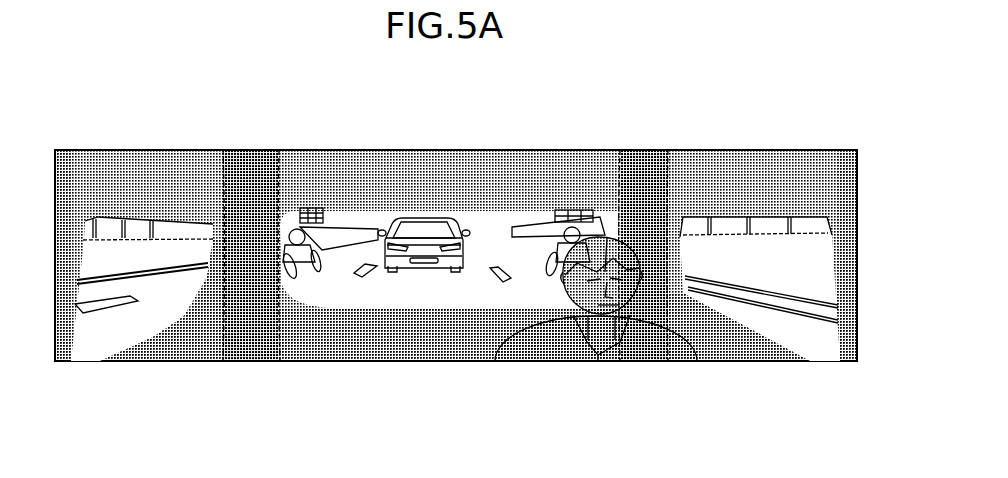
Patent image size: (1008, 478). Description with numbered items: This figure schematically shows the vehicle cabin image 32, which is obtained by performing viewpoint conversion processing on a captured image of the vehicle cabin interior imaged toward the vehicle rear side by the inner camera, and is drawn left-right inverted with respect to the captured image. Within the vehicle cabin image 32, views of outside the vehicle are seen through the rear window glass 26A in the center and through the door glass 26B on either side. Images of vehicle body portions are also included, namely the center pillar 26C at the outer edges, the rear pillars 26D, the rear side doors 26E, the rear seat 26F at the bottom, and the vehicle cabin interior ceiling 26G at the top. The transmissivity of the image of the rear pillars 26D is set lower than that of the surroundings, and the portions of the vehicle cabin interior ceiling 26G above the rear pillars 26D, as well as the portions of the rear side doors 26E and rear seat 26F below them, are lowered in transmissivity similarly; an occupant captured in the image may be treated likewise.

The rear window glass 26A is at (488, 225).
The door glass 26B is at (772, 223).
The center pillar 26C is at (53, 307).
The rear pillars 26D is at (205, 272).
The rear side doors 26E is at (153, 352).
The rear seat 26F is at (427, 361).
The vehicle cabin interior ceiling 26G is at (422, 170).
The vehicle cabin image 32 is at (620, 146).